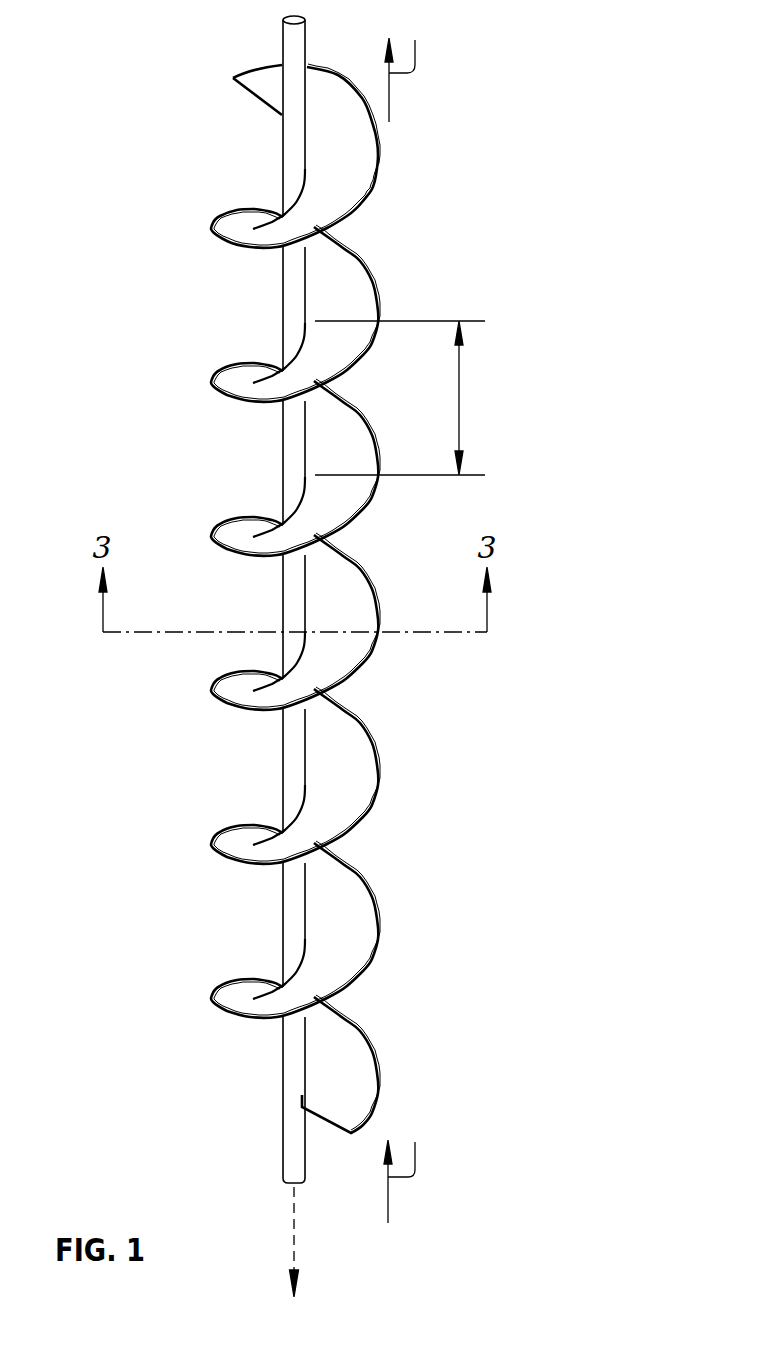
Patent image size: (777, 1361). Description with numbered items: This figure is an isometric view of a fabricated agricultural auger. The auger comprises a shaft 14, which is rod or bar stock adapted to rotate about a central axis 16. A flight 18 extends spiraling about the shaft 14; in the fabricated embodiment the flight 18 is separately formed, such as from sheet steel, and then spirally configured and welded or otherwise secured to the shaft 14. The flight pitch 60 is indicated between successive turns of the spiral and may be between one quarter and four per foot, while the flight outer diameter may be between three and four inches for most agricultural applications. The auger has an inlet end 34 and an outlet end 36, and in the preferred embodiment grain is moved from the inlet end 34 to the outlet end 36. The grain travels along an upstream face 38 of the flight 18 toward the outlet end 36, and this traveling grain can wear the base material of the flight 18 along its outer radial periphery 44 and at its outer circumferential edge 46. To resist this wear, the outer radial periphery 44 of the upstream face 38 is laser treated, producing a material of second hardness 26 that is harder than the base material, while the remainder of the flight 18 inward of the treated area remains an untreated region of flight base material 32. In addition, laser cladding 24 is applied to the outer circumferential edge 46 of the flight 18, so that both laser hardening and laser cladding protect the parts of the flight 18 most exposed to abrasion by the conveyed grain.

The shaft 14 is at (282, 1148).
The central axis 16 is at (294, 1217).
The flight 18 is at (334, 929).
The laser cladding 24 is at (328, 929).
The material of second hardness 26 is at (278, 929).
The untreated region of flight base material 32 is at (318, 920).
The inlet end 34 is at (406, 1165).
The outlet end 36 is at (406, 65).
The upstream face 38 is at (366, 267).
The outer radial periphery 44 is at (328, 929).
The outer circumferential edge 46 is at (328, 929).
The flight pitch 60 is at (460, 373).